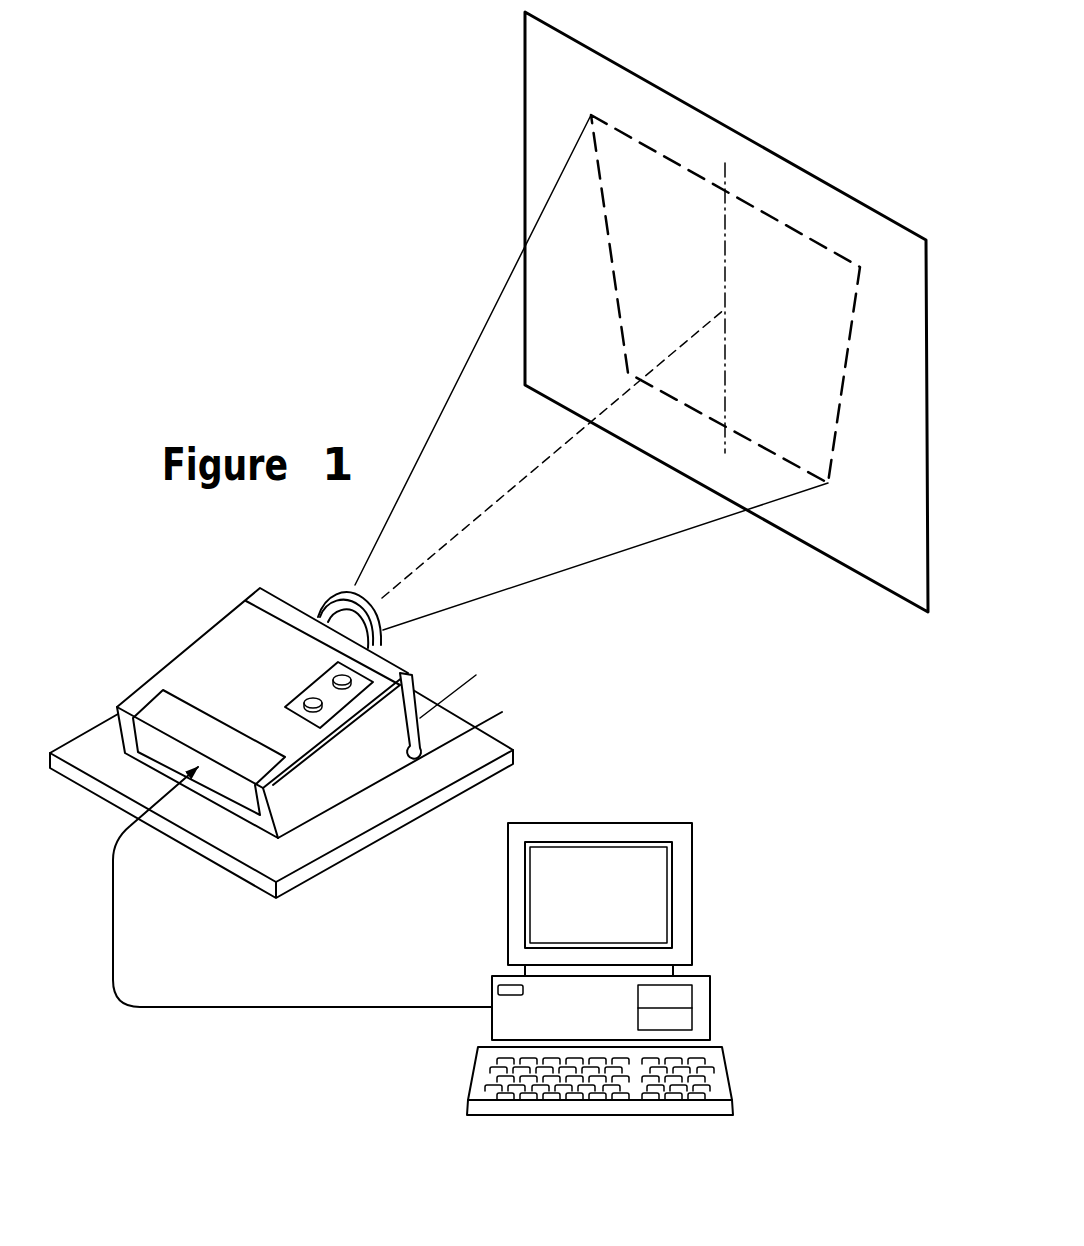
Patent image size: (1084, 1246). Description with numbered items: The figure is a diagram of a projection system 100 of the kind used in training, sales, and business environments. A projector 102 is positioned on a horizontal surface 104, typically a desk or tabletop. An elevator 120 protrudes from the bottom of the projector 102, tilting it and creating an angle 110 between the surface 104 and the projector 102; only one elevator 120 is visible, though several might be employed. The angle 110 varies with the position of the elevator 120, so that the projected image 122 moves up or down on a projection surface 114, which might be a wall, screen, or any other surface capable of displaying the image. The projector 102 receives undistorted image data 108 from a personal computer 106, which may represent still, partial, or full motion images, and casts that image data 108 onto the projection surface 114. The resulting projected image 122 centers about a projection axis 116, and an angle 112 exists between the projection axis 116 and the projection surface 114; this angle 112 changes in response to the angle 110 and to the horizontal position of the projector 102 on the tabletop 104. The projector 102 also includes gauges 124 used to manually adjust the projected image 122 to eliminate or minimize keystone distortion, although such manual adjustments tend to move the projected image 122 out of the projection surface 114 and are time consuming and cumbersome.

The projection system 100 is at (250, 177).
The projector 102 is at (193, 643).
The horizontal surface 104 is at (93, 729).
The personal computer 106 is at (600, 822).
The image data 108 is at (325, 1005).
The angle 110 is at (492, 709).
The angle 112 is at (683, 351).
The projection surface 114 is at (525, 132).
The projection axis 116 is at (518, 489).
The elevator 120 is at (420, 738).
The projected image 122 is at (618, 313).
The gauges 124 is at (309, 688).